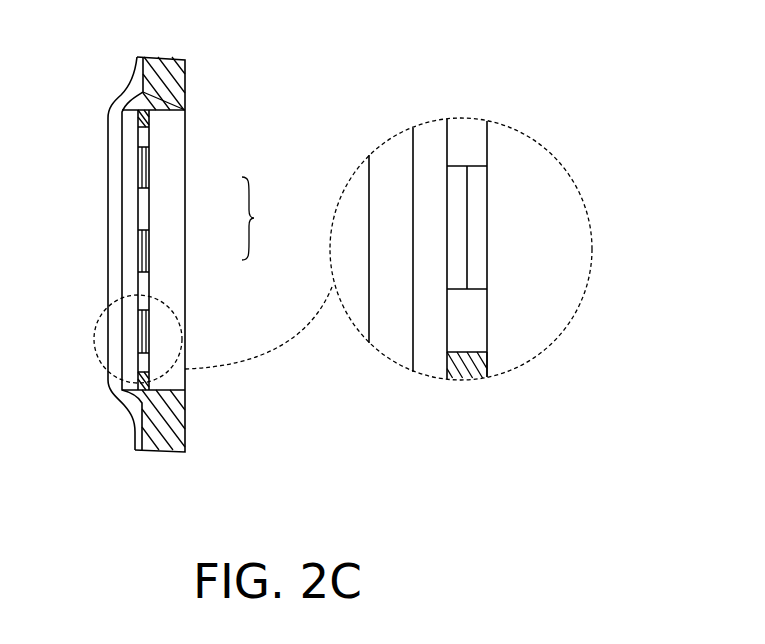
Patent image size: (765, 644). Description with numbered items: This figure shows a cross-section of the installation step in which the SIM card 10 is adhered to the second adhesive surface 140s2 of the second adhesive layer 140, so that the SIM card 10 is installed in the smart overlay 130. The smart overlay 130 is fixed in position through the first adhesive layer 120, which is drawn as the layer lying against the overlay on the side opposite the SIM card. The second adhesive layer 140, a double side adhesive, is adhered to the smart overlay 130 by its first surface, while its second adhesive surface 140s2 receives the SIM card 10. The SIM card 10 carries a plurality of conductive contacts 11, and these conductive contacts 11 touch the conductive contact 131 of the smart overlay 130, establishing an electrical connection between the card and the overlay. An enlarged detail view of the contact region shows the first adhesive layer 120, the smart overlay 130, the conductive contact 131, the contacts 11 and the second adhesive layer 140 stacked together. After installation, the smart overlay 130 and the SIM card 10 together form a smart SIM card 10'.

The SIM card 10 is at (370, 254).
The smart SIM card 10' is at (266, 218).
The conductive contacts 11 is at (475, 241).
The first adhesive layer 120 is at (110, 157).
The smart overlay 130 is at (128, 176).
The conductive contacts 131 is at (457, 178).
The second adhesive layer 140 is at (447, 368).
The second adhesive surface 140s2 is at (487, 367).